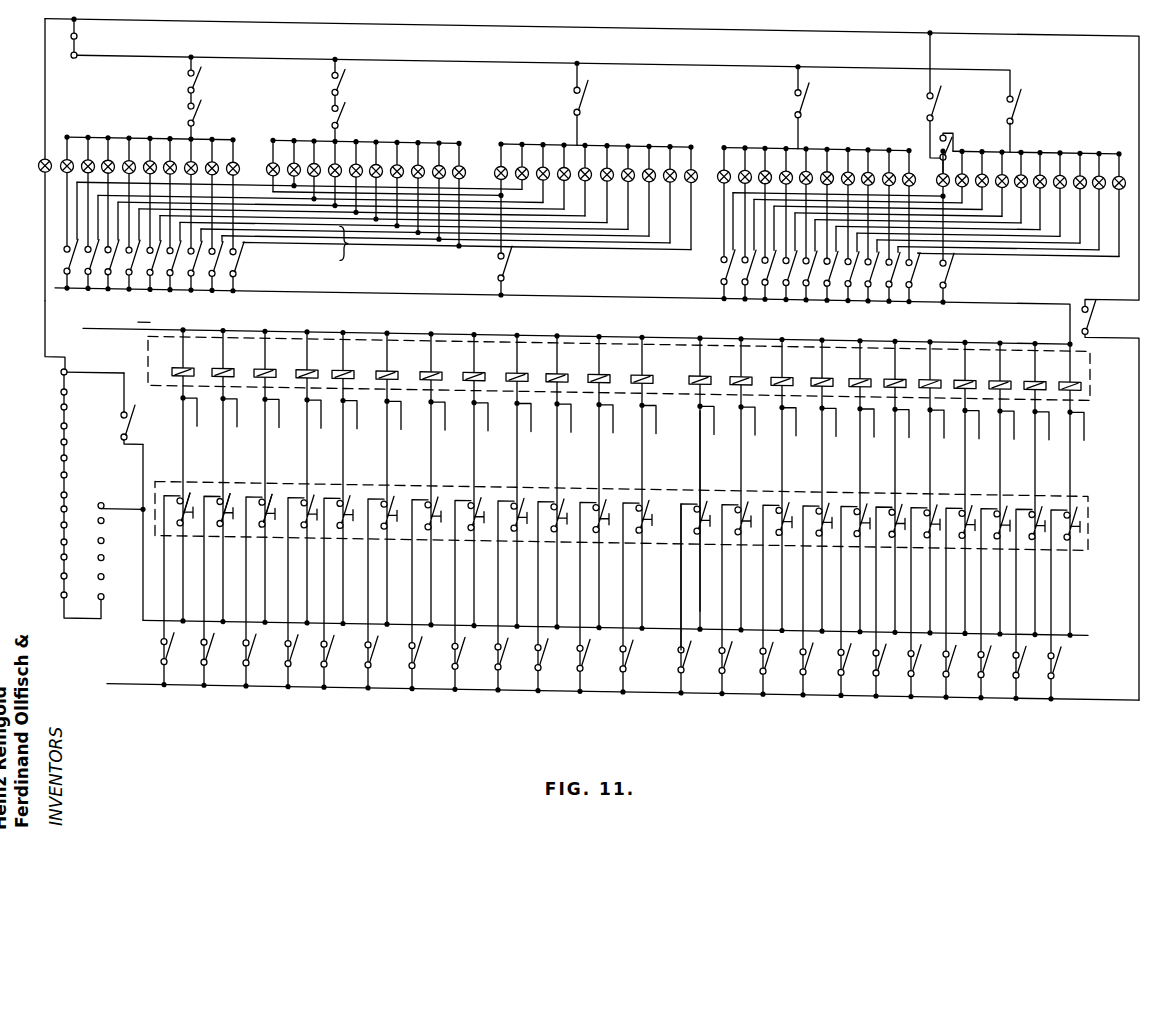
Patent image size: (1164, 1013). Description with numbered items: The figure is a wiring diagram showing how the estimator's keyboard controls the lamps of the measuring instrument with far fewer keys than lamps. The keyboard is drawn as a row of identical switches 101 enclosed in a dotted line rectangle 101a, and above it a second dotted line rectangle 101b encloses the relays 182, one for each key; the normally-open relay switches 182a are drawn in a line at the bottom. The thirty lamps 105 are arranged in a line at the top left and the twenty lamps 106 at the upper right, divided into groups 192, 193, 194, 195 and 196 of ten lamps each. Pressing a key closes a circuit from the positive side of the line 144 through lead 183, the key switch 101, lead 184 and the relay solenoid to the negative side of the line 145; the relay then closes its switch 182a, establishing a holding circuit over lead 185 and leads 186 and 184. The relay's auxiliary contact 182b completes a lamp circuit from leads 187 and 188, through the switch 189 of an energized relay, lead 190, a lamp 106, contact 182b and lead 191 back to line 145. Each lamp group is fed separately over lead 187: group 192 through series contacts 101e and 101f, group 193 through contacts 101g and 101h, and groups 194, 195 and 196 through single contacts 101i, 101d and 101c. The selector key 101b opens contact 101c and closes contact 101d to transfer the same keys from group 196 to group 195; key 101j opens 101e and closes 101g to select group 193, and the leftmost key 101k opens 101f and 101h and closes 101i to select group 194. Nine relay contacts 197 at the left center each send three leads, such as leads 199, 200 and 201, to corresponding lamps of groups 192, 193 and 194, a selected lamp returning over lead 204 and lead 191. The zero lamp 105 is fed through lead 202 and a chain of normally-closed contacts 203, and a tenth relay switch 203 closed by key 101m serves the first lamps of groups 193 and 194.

The line (positive side) 144 is at (46, 96).
The line (negative side) 145 is at (356, 327).
The relays 182 is at (433, 361).
The relay switches 182a is at (292, 660).
The auxiliary contact 182b is at (719, 259).
The lead 183 is at (697, 595).
The lead 184 is at (700, 458).
The lead 185 is at (512, 27).
The lead 186 is at (681, 566).
The lead 187 is at (250, 56).
The lead 188 is at (797, 78).
The switch 189 is at (806, 90).
The lead 190 is at (906, 146).
The lead 191 is at (338, 287).
The lamp group 192 is at (174, 133).
The lamp group 193 is at (305, 133).
The lamp group 194 is at (607, 133).
The lamp group 195 is at (721, 134).
The lamp group 196 is at (1098, 132).
The relay contacts 197 is at (240, 270).
The lead 199 is at (233, 181).
The lead 200 is at (460, 235).
The lead 201 is at (597, 240).
The lead 202 is at (45, 318).
The relay contacts 203 is at (496, 258).
The lead 204 is at (384, 233).
The lamps 105 is at (112, 158).
The lamps 106 is at (826, 158).
The key switches 101 is at (472, 494).
The dotted line rectangle 101a is at (150, 492).
The selector key 101b is at (148, 357).
The relay contact 101c is at (1018, 90).
The relay contact 101d is at (796, 108).
The relay contact 101e is at (188, 82).
The relay contact 101f is at (196, 118).
The relay contact 101g is at (331, 73).
The relay contact 101h is at (340, 116).
The relay contact 101i is at (575, 88).
The key 101j is at (220, 495).
The key 101k is at (180, 495).
The key switch 101m is at (262, 495).